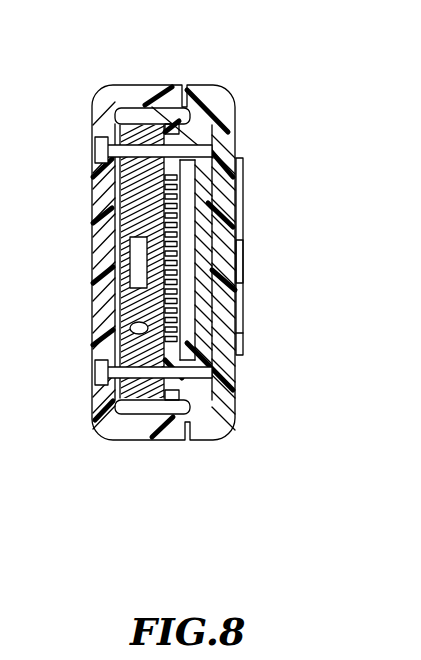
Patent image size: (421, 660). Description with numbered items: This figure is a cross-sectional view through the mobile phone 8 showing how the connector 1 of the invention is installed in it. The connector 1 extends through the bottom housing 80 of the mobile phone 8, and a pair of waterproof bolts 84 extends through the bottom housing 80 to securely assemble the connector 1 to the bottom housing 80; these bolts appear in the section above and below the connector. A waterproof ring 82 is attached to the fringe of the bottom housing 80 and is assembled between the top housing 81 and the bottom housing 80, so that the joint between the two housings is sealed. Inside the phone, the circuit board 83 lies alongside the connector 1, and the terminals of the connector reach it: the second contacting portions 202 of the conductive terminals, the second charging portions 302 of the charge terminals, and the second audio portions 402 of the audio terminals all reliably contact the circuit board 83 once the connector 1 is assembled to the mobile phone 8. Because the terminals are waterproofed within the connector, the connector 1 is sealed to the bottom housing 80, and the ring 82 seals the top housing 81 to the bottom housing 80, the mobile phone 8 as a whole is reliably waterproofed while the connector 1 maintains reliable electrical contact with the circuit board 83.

The mobile phone 8 is at (243, 84).
The bottom housing 80 is at (184, 98).
The top housing 81 is at (237, 128).
The waterproof ring 82 is at (222, 435).
The circuit board 83 is at (232, 200).
The waterproof bolts 84 is at (94, 150).
The connector 1 is at (124, 212).
The second charging portions 302 is at (233, 232).
The second contacting portions 202 is at (232, 285).
The second audio portions 402 is at (232, 330).